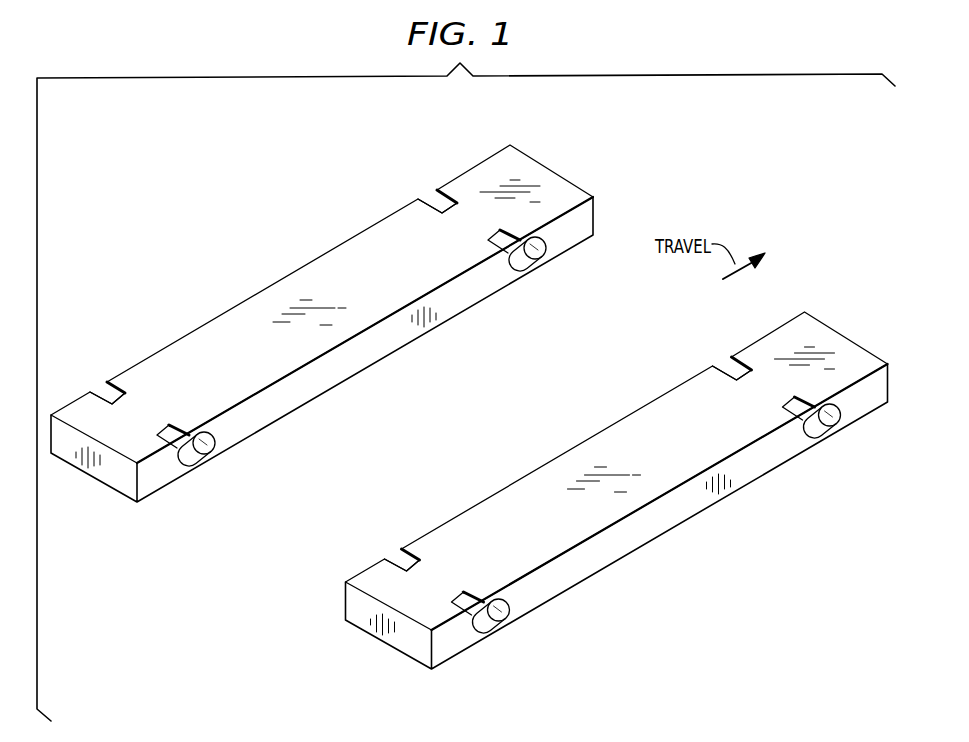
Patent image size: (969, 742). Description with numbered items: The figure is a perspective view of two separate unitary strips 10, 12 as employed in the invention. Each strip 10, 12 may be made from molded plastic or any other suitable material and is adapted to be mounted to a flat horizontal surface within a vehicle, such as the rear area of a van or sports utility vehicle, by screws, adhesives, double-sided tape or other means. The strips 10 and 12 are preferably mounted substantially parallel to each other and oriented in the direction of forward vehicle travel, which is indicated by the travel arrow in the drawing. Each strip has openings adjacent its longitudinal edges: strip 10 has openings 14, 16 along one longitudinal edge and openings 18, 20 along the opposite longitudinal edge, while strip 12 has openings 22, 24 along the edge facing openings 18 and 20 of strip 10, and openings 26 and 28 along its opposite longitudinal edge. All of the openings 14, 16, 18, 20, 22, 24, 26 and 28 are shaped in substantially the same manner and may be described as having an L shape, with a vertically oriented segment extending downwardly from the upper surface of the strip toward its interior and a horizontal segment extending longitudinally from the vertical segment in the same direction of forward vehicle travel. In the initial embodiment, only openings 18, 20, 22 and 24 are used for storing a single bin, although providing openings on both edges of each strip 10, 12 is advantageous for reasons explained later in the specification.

The strip 10 is at (275, 283).
The strip 12 is at (617, 490).
The opening 14 is at (102, 392).
The opening 16 is at (433, 202).
The opening 18 is at (199, 453).
The opening 20 is at (526, 258).
The opening 22 is at (402, 541).
The opening 24 is at (732, 348).
The opening 26 is at (497, 625).
The opening 28 is at (827, 431).